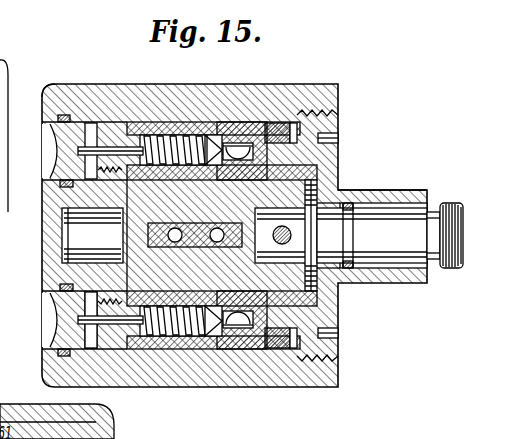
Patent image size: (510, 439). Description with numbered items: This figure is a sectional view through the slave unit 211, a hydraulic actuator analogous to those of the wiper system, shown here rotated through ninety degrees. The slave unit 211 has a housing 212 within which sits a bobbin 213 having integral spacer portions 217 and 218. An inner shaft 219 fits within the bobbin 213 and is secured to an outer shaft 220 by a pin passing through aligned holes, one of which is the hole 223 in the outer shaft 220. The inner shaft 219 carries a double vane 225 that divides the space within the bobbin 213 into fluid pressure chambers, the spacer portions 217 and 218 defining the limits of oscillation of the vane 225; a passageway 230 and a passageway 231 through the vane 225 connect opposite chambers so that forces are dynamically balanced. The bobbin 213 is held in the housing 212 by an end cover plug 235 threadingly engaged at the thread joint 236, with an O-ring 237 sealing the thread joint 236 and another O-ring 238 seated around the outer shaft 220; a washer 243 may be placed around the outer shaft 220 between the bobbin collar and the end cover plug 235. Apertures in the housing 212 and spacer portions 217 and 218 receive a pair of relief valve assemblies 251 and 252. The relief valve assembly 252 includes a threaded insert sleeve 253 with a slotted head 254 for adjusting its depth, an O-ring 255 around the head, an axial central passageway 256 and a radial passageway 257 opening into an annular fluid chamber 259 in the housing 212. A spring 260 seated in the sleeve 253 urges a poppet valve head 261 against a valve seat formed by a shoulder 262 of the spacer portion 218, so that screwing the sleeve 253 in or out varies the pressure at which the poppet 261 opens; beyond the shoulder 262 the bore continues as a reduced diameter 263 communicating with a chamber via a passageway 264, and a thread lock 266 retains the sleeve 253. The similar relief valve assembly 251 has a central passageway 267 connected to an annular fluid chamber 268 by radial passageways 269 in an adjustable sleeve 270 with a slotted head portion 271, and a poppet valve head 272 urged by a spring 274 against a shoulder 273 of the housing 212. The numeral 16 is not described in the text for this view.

The pump 16 is at (16, 208).
The slave unit 211 is at (341, 84).
The housing 212 is at (343, 93).
The bobbin 213 is at (287, 373).
The spacer portion 217 is at (238, 342).
The spacer portion 218 is at (278, 112).
The inner shaft 219 is at (320, 163).
The outer shaft 220 is at (403, 253).
The hole 223 is at (310, 205).
The double vane 225 is at (190, 222).
The passageway 230 is at (217, 245).
The passageway 231 is at (173, 247).
The end cover plug 235 is at (330, 310).
The thread joint 236 is at (327, 367).
The O-ring 237 is at (290, 383).
The O-ring 238 is at (343, 200).
The washer 243 is at (338, 288).
The relief valve assembly 251 is at (123, 337).
The relief valve assembly 252 is at (130, 130).
The threaded insert sleeve 253 is at (116, 137).
The slotted head 254 is at (56, 153).
The O-ring 255 is at (63, 118).
The axial central passageway 256 is at (147, 143).
The radial passageway 257 is at (66, 92).
The annular fluid chamber 259 is at (66, 88).
The spring 260 is at (190, 135).
The poppet valve head 261 is at (218, 130).
The shoulder 262 is at (240, 115).
The reduced diameter 263 is at (300, 100).
The passageway 264 is at (208, 162).
The thread lock 266 is at (108, 125).
The central passageway 267 is at (133, 323).
The annular fluid chamber 268 is at (80, 285).
The radial passageway 269 is at (83, 320).
The adjustable sleeve 270 is at (80, 350).
The slotted head portion 271 is at (55, 315).
The poppet valve head 272 is at (222, 333).
The shoulder 273 is at (224, 360).
The spring 274 is at (173, 337).